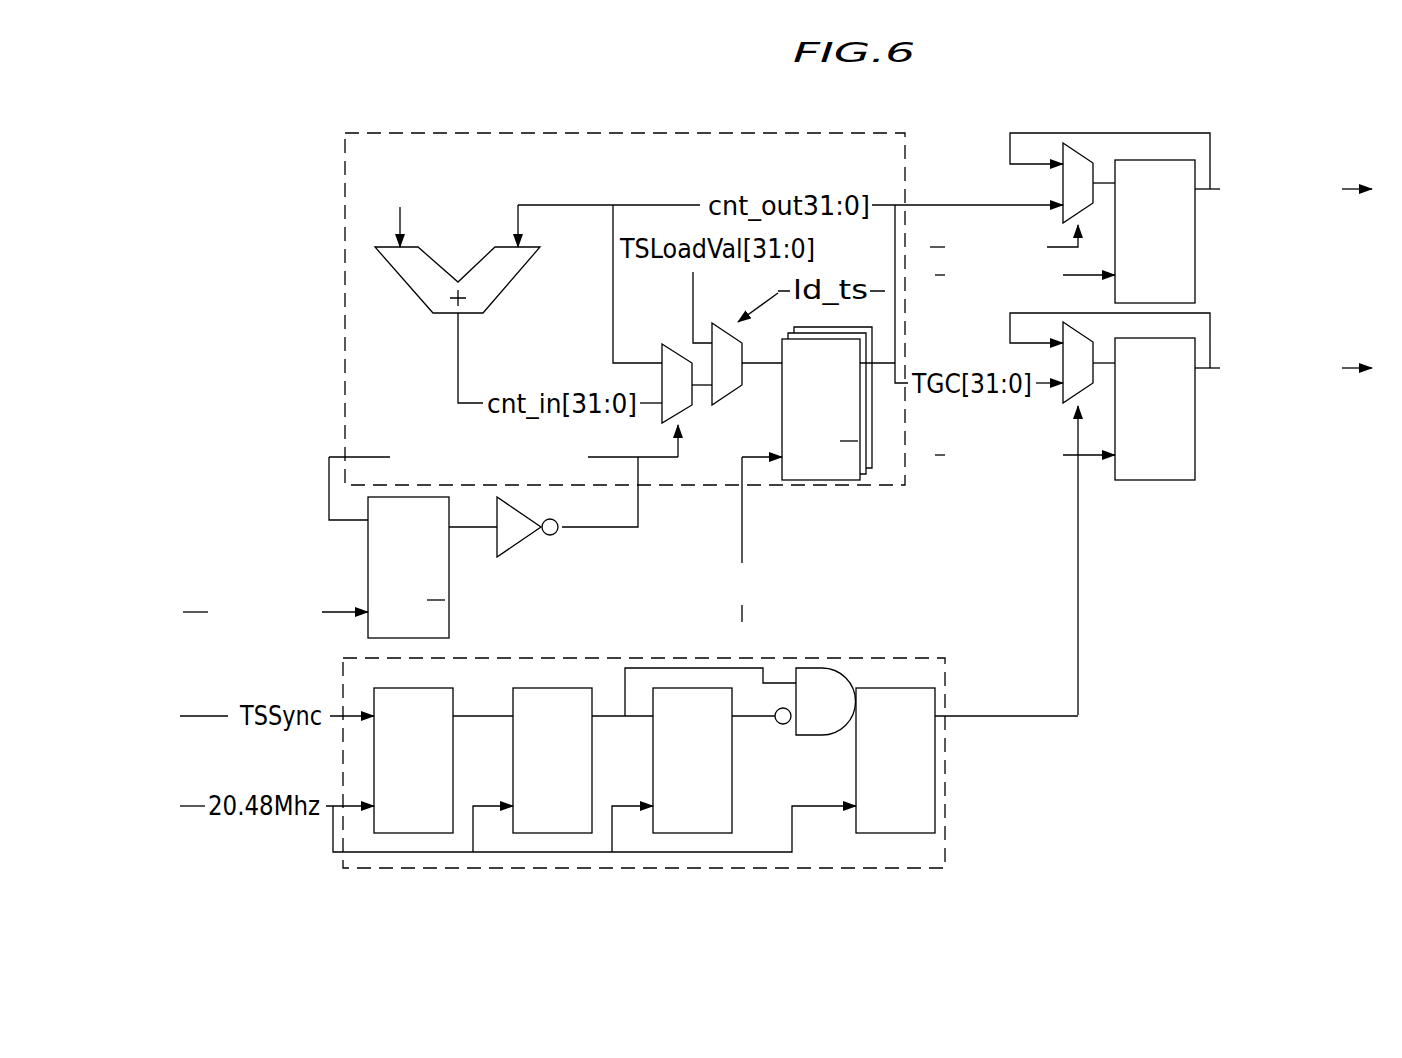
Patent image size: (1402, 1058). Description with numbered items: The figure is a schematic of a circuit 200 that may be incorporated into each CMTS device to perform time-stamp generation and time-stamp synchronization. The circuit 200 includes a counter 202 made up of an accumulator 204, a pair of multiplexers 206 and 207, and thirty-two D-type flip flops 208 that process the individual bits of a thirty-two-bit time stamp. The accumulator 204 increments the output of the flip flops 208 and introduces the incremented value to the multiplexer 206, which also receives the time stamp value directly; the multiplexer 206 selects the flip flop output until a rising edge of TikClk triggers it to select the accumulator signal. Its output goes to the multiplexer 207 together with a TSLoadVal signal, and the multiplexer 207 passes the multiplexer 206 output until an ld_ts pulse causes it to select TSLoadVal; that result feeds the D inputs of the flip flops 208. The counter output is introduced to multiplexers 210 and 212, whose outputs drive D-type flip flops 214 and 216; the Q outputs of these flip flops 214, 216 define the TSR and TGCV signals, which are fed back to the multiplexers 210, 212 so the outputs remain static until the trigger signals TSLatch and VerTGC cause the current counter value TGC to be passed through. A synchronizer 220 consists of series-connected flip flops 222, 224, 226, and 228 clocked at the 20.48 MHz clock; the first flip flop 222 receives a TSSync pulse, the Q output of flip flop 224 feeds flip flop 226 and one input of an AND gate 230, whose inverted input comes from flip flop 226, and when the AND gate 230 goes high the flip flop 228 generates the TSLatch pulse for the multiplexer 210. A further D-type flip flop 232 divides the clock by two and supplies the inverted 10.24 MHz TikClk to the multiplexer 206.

The circuit 200 is at (757, 78).
The counter 202 is at (862, 133).
The accumulator 204 is at (418, 247).
The multiplexer 206 is at (665, 348).
The multiplexer 207 is at (745, 382).
The D-type flip flops 208 is at (883, 486).
The multiplexer 210 is at (1063, 326).
The multiplexer 212 is at (1063, 183).
The D-type flip flop 214 is at (1155, 480).
The D-type flip flop 216 is at (1195, 248).
The synchronizer 220 is at (872, 658).
The first flip flop 222 is at (410, 688).
The flip flop 224 is at (580, 672).
The flip flop 226 is at (732, 768).
The flip flop 228 is at (935, 768).
The AND gate 230 is at (808, 668).
The D-type flip flop 232 is at (449, 606).